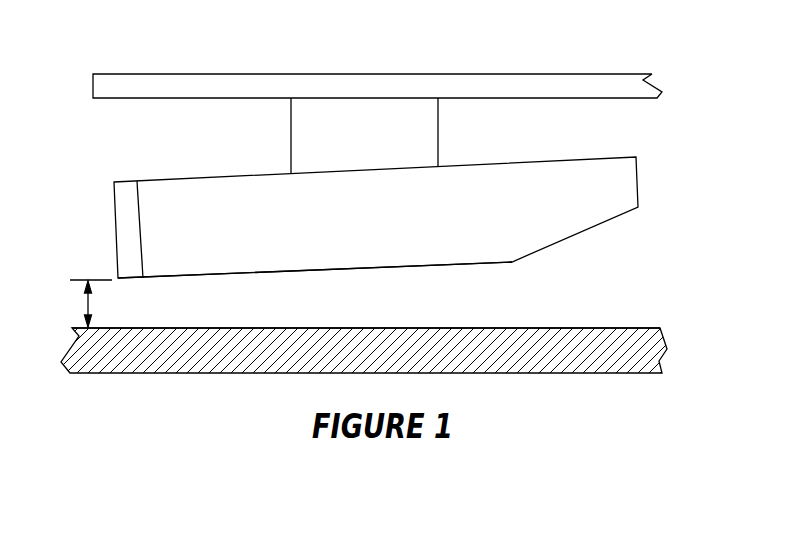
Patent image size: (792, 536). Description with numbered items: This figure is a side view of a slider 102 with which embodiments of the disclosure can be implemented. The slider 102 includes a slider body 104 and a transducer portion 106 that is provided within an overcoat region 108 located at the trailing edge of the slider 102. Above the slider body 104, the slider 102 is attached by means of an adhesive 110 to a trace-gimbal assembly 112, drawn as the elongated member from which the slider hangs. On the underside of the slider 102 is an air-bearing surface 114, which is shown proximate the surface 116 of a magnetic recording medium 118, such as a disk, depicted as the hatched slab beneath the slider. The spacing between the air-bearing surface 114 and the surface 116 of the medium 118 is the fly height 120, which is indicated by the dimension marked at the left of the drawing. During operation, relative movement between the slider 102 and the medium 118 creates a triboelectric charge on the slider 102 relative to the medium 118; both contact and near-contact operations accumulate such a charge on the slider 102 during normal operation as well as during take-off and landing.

The slider 102 is at (406, 173).
The slider body 104 is at (548, 165).
The transducer portion 106 is at (140, 300).
The overcoat region 108 is at (116, 216).
The adhesive 110 is at (439, 130).
The trace-gimbal assembly 112 is at (590, 80).
The air-bearing surface 114 is at (395, 266).
The surface of magnetic recording medium 116 is at (550, 328).
The magnetic recording medium 118 is at (527, 367).
The fly height 120 is at (77, 303).